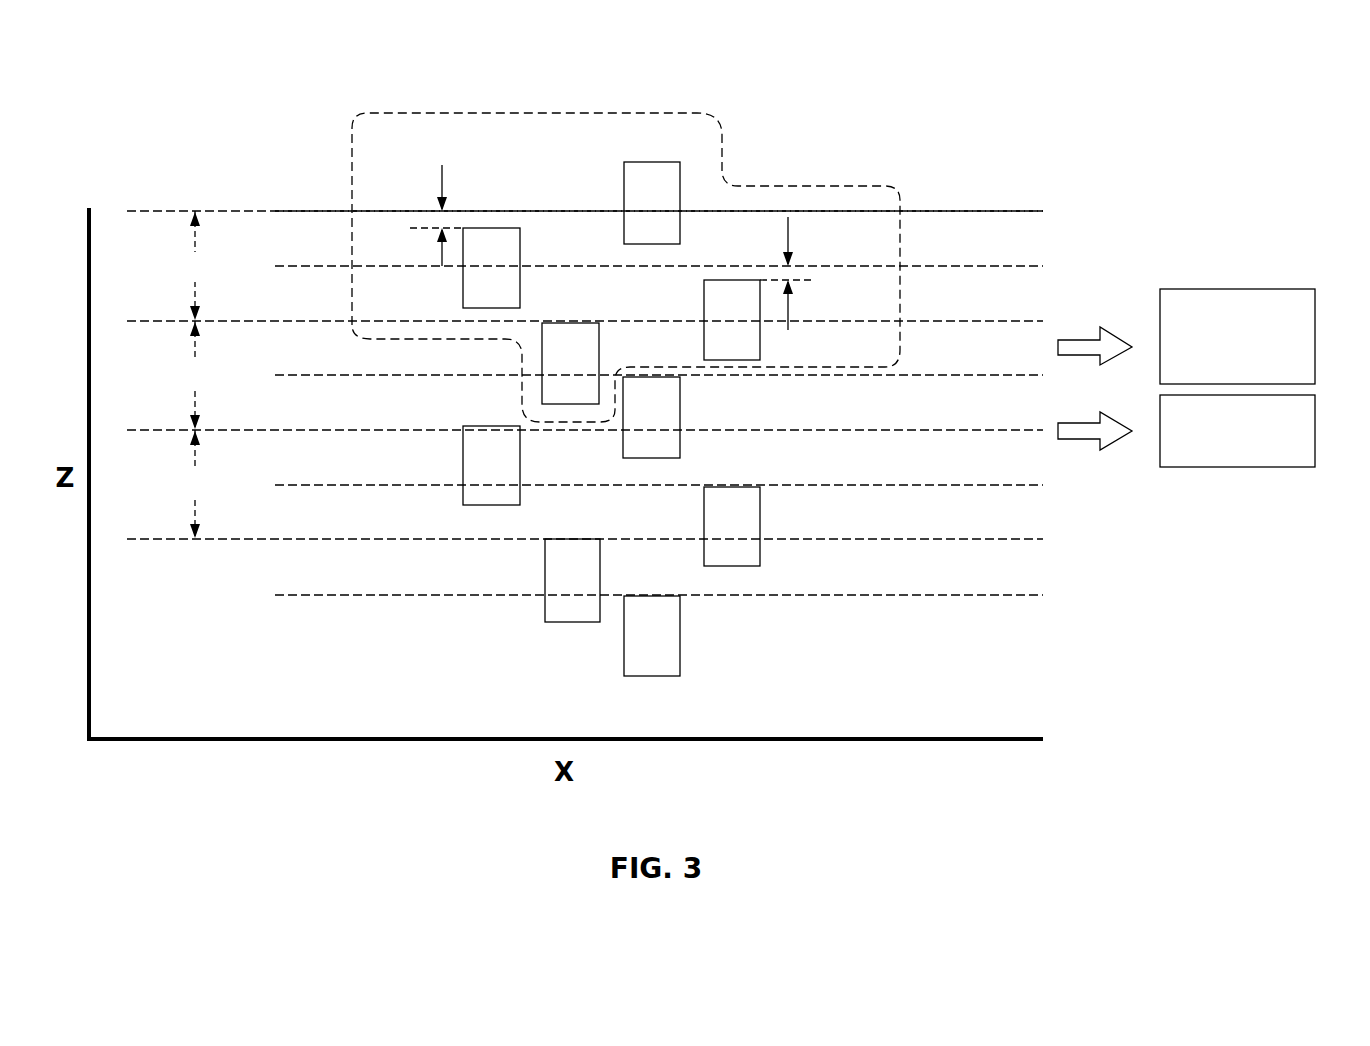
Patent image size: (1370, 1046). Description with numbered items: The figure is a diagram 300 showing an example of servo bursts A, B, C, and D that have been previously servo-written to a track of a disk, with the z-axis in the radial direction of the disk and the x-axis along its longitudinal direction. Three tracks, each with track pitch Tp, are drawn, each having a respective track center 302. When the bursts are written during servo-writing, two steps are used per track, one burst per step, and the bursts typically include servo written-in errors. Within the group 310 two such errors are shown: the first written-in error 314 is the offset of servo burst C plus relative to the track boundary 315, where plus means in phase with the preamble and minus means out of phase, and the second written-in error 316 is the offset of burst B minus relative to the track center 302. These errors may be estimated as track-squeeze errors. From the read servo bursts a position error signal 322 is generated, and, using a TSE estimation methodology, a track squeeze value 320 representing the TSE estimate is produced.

The diagram 300 is at (278, 98).
The track center 302 is at (935, 266).
The group 310 is at (648, 113).
The d[0] 314 is at (442, 175).
The track boundary 315 is at (528, 211).
The d[1] 316 is at (788, 240).
The track squeeze value 320 is at (1268, 289).
The position error signal 322 is at (1278, 467).